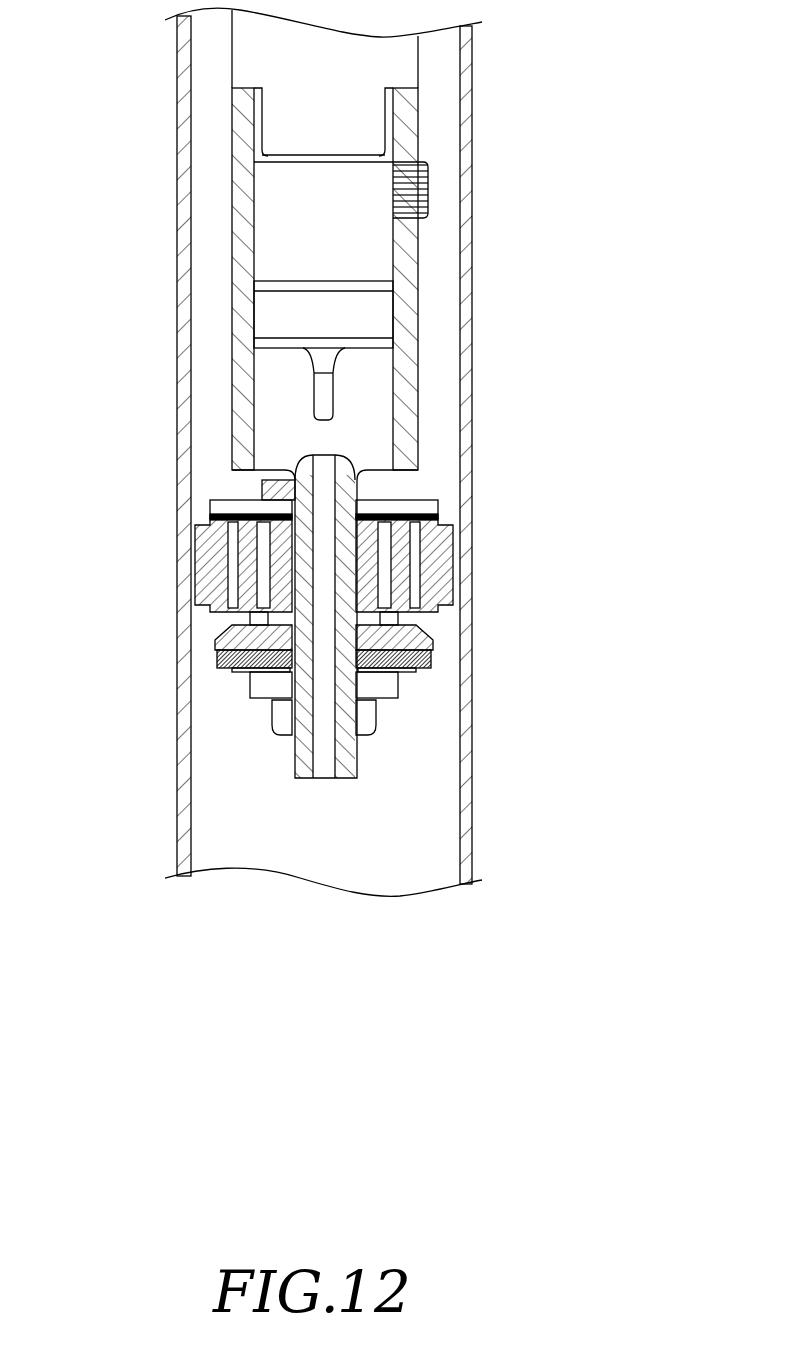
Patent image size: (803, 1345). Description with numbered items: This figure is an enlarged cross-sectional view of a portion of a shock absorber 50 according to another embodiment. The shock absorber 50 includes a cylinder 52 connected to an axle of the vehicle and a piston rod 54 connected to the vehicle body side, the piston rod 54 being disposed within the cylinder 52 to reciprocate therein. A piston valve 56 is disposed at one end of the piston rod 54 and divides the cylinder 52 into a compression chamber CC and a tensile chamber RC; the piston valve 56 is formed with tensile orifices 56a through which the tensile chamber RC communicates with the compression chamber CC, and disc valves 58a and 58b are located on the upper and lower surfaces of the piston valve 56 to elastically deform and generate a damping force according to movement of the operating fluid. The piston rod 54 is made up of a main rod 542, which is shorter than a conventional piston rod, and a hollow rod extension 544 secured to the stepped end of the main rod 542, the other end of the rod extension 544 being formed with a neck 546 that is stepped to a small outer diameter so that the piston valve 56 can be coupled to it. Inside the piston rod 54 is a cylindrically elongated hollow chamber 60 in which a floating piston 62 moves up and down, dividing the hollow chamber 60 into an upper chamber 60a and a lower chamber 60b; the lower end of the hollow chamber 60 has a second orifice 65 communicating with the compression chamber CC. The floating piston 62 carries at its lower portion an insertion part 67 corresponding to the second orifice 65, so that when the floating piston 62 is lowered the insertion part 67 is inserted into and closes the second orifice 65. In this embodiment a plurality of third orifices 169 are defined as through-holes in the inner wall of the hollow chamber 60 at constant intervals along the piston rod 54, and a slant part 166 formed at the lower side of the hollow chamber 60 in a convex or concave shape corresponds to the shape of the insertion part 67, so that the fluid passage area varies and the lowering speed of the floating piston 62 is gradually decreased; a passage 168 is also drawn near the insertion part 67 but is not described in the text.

The shock absorber 50 is at (502, 58).
The cylinder 52 is at (465, 105).
The piston rod 54 is at (432, 256).
The piston valve 56 is at (447, 530).
The tensile orifices 56a is at (420, 588).
The disc valve 58a is at (423, 668).
The disc valve 58b is at (430, 500).
The hollow chamber 60 is at (84, 250).
The upper chamber 60a is at (276, 246).
The lower chamber 60b is at (276, 368).
The floating piston 62 is at (388, 306).
The second orifice 65 is at (328, 737).
The insertion part 67 is at (335, 403).
The slant part 166 is at (250, 463).
The passage 168 is at (340, 358).
The third orifices 169 is at (421, 187).
The main rod 542 is at (245, 45).
The rod extension 544 is at (245, 186).
The neck 546 is at (232, 590).
The tensile chamber RC is at (209, 132).
The compression chamber CC is at (224, 784).